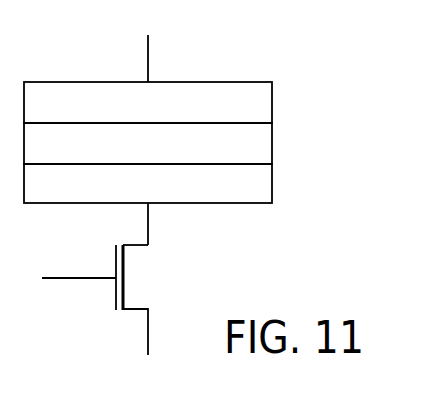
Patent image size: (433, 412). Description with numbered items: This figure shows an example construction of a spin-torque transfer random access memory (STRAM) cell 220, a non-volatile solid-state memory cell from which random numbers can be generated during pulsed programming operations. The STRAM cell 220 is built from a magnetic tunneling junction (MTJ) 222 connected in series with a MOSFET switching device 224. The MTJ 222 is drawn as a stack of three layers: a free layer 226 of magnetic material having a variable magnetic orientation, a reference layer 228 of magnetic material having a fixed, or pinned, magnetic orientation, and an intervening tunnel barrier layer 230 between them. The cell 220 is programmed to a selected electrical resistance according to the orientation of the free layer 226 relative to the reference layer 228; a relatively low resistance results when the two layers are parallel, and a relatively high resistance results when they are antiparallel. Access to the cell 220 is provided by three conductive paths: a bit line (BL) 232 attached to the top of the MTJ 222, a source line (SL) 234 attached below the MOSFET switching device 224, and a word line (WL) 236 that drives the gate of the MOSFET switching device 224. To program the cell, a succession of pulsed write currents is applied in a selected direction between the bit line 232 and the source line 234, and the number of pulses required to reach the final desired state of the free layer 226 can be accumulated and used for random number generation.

The spin-torque transfer random access memory (STRAM) cell 220 is at (300, 41).
The magnetic tunneling junction (MTJ) 222 is at (65, 68).
The MOSFET switching device 224 is at (124, 261).
The free layer 226 is at (272, 102).
The reference layer 228 is at (272, 185).
The tunnel barrier layer 230 is at (272, 145).
The bit line (BL) 232 is at (147, 60).
The source line (SL) 234 is at (147, 342).
The word line (WL) 236 is at (70, 279).